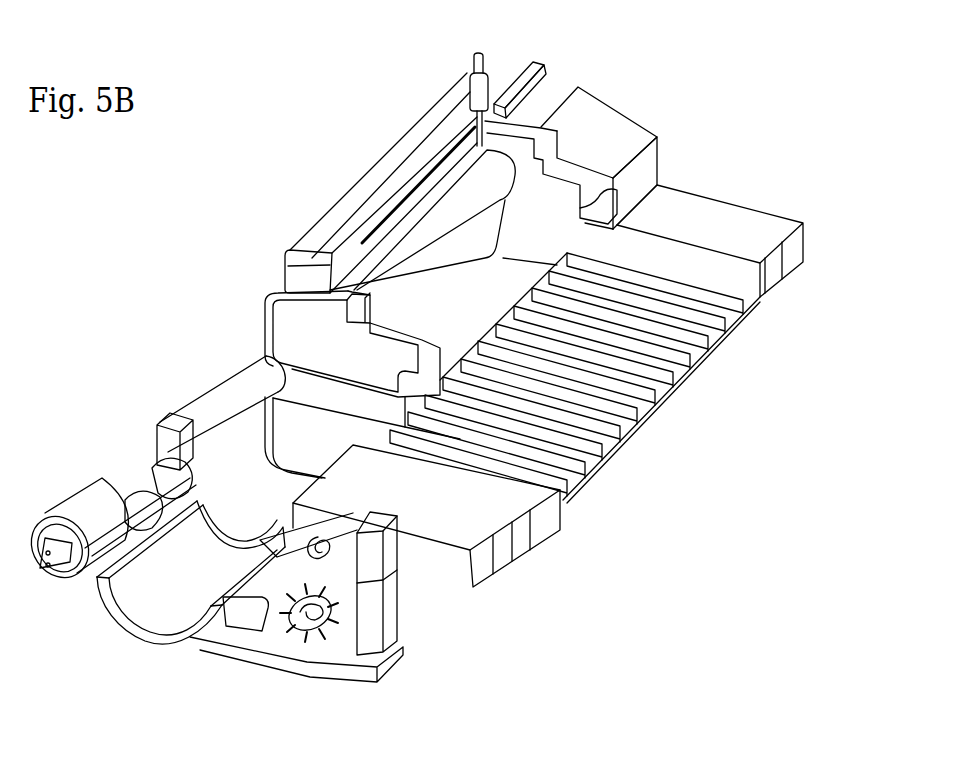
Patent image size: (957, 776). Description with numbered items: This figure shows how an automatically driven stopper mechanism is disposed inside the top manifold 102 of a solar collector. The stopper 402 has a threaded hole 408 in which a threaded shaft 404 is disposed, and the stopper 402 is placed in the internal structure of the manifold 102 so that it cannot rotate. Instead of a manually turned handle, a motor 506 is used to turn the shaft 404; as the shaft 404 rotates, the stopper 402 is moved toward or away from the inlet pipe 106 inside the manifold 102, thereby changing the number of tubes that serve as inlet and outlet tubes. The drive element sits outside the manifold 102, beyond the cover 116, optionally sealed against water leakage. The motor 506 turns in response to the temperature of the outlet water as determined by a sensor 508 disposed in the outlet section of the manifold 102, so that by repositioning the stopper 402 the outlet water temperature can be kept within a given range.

The manifold 102 is at (320, 222).
The inlet pipe 106 is at (144, 620).
The cover 116 is at (262, 645).
The stopper 402 is at (268, 333).
The threaded shaft 404 is at (242, 407).
The threaded hole 408 is at (268, 372).
The motor 506 is at (64, 577).
The sensor 508 is at (489, 112).